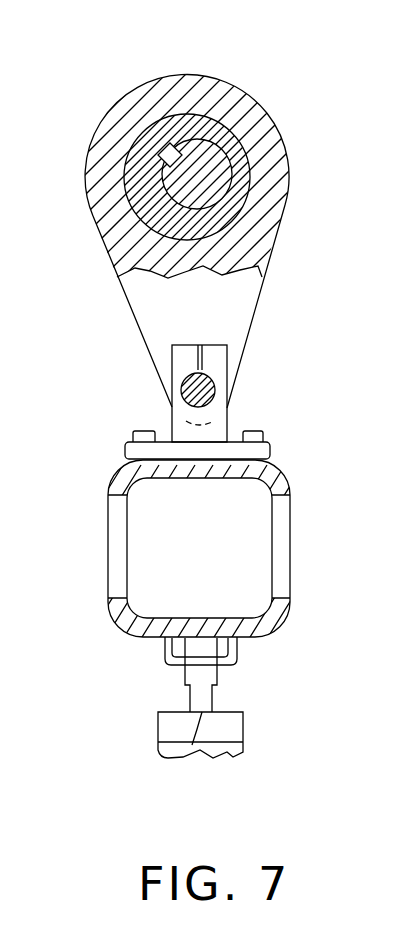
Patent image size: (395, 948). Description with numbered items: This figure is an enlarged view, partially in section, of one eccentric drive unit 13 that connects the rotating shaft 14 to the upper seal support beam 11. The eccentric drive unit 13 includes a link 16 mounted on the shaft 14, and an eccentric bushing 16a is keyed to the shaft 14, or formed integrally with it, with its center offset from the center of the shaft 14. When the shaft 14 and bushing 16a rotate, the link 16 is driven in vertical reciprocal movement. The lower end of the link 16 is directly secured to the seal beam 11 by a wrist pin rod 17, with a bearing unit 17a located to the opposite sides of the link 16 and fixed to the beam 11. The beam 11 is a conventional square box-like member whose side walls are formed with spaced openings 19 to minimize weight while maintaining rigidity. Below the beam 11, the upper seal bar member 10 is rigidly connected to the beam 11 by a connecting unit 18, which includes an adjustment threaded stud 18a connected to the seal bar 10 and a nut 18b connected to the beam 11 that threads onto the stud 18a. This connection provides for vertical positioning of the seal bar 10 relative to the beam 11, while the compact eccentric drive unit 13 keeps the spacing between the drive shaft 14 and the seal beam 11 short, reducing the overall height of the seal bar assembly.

The upper seal bar member 10 is at (235, 759).
The upper seal support beam 11 is at (293, 484).
The eccentric drive unit 13 is at (251, 82).
The rotating shaft 14 is at (222, 175).
The link 16 is at (223, 312).
The eccentric bushing 16a is at (222, 213).
The wrist pin rod 17 is at (202, 414).
The bearing unit 17a is at (172, 440).
The connecting unit 18 is at (174, 690).
The adjustment threaded stud 18a is at (185, 753).
The nut 18b is at (190, 648).
The opening 19 is at (278, 547).